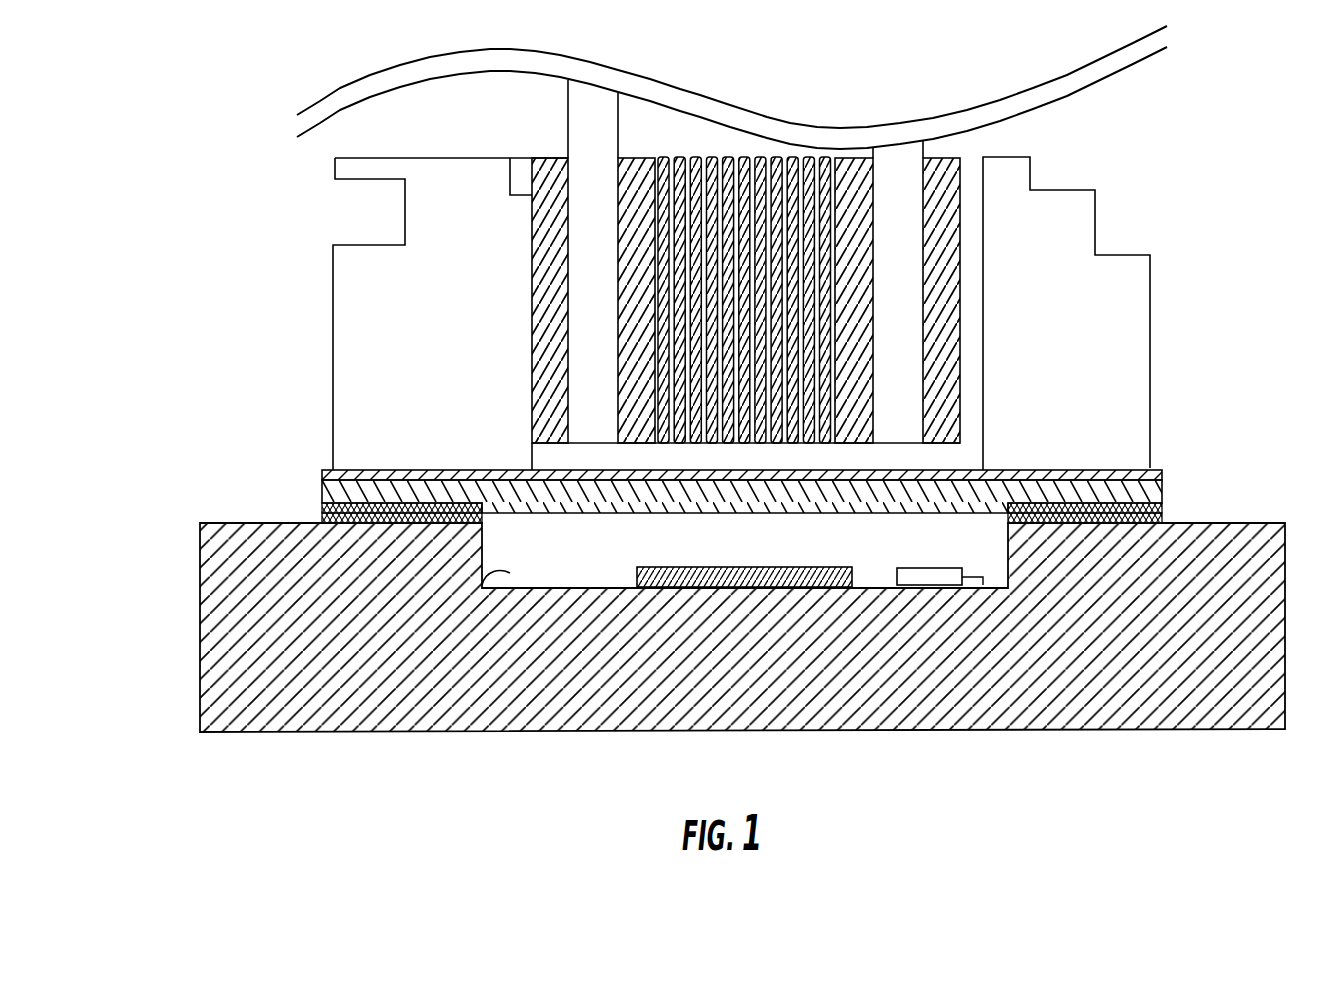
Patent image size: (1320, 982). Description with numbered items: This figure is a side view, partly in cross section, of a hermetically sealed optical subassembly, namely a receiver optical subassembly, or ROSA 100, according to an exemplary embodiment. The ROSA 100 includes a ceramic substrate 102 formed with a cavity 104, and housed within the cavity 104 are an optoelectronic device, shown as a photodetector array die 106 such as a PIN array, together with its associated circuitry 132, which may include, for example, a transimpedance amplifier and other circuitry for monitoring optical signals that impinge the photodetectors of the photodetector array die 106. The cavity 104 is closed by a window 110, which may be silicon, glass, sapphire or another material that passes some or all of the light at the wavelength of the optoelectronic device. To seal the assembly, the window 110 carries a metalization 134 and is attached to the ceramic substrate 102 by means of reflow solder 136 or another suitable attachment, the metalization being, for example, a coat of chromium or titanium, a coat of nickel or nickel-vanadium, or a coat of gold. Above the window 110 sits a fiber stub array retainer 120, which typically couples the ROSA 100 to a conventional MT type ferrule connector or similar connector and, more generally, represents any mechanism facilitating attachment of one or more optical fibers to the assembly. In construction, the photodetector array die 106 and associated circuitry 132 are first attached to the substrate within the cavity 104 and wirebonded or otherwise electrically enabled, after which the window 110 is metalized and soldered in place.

The ROSA 100 is at (710, 418).
The ceramic substrate 102 is at (200, 582).
The cavity 104 is at (482, 588).
The photodetector array die 106 is at (852, 577).
The window 110 is at (1163, 482).
The fiber stub array retainer 120 is at (1095, 225).
The associated circuitry 132 is at (963, 579).
The metalization 134 is at (1172, 500).
The reflow solder 136 is at (1168, 518).